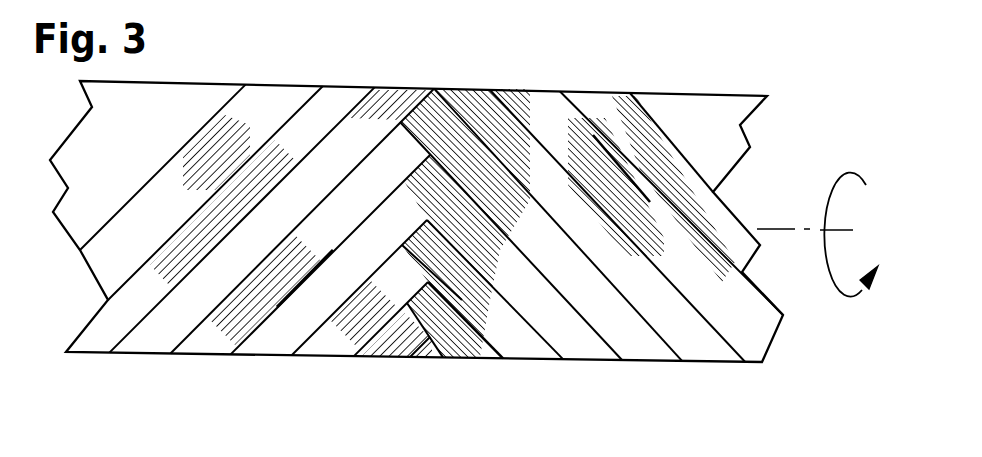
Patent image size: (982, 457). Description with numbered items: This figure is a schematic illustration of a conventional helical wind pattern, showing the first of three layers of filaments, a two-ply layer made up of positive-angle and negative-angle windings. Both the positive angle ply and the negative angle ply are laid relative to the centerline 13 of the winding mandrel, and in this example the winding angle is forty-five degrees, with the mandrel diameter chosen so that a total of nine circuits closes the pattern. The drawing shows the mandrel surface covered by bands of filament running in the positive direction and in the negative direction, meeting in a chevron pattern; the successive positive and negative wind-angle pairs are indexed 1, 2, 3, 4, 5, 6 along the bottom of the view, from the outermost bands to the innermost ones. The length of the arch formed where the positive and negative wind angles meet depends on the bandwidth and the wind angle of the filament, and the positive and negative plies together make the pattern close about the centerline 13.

The centerline 13 is at (778, 228).
The first layer (angle alpha 1) 1 is at (430, 254).
The second layer (angle alpha 2) 2 is at (435, 271).
The third layer (angle alpha 3) 3 is at (432, 319).
The fourth layer (angle alpha 4) 4 is at (428, 350).
The fifth layer (angle alpha 5) 5 is at (432, 331).
The sixth layer (angle alpha 6) 6 is at (412, 385).